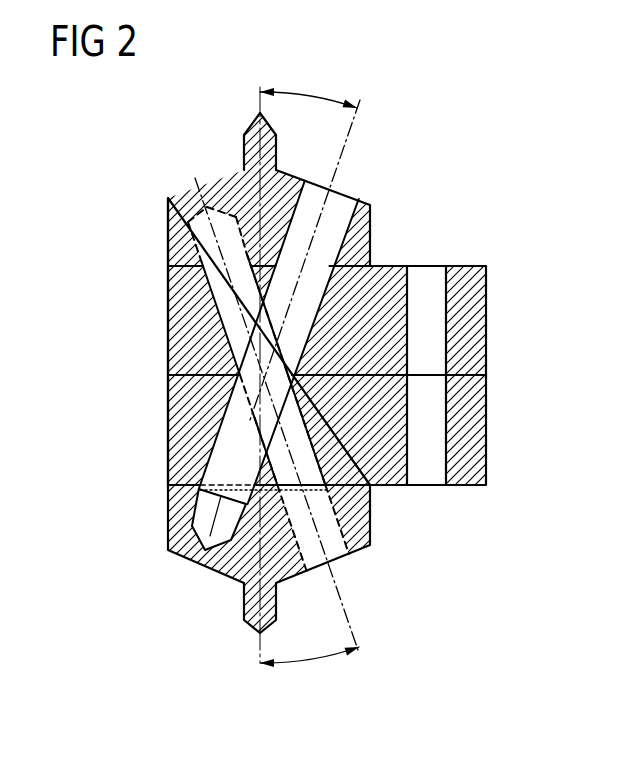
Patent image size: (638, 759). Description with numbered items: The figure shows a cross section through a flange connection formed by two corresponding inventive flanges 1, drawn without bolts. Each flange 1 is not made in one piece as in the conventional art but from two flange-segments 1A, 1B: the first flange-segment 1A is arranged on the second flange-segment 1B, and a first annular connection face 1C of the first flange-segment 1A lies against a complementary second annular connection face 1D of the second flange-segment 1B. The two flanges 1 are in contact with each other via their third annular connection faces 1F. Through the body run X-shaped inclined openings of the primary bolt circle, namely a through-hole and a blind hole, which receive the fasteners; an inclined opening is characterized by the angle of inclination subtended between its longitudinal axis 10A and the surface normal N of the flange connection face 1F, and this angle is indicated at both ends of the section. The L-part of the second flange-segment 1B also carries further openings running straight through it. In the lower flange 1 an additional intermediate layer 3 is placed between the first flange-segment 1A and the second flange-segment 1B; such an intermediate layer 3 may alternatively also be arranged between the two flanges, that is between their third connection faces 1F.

The flange 1 is at (170, 164).
The first flange-segment 1A is at (212, 180).
The second flange-segment 1B is at (475, 332).
The first annular connection face 1C is at (173, 262).
The second annular connection face 1D is at (173, 270).
The third annular connection face 1F is at (172, 372).
The intermediate layer 3 is at (373, 487).
The longitudinal axis 10A is at (353, 130).
The surface normal N is at (258, 658).